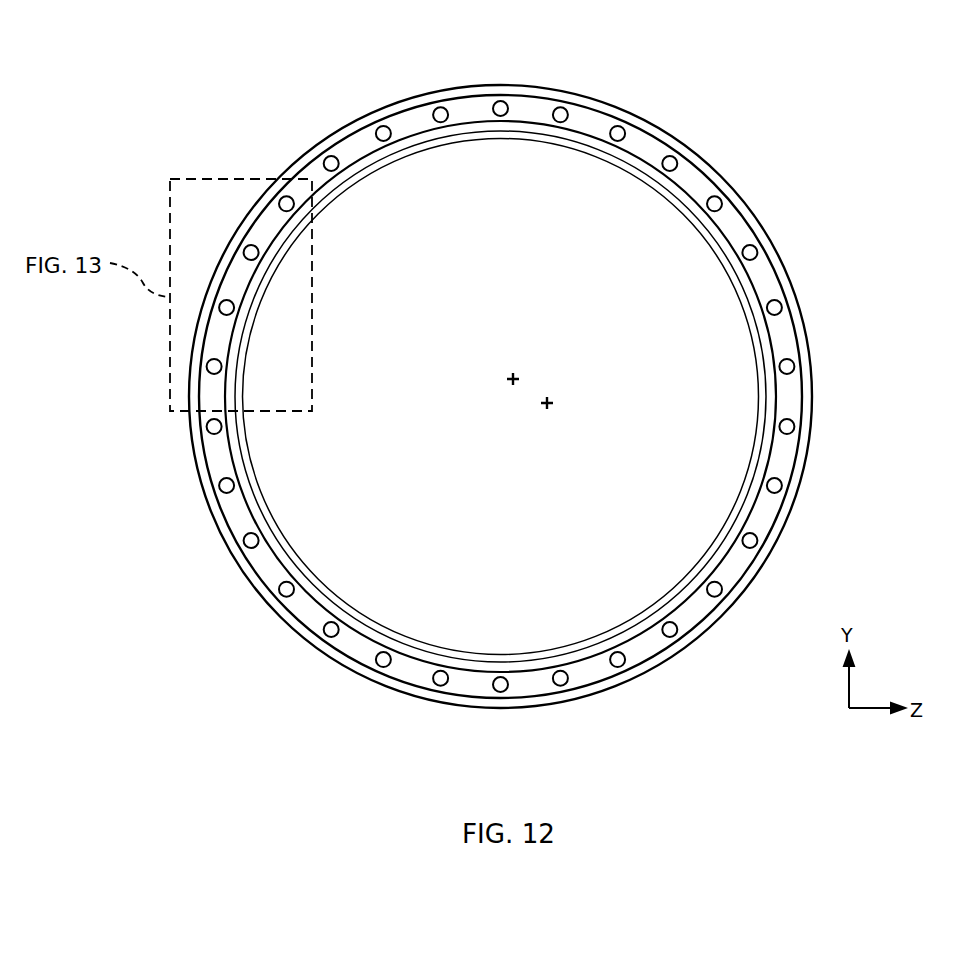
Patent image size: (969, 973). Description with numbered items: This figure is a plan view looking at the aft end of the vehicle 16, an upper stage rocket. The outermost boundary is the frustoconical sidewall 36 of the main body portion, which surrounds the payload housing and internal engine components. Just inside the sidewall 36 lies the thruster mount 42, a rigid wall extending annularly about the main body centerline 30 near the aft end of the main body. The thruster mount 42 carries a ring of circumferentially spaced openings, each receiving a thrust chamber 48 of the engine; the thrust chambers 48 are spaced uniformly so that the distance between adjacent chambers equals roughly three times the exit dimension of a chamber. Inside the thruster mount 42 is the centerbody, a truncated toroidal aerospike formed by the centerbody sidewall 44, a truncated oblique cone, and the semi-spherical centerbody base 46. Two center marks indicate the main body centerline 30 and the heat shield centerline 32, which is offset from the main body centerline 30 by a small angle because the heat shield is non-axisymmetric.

The vehicle 16 is at (307, 87).
The main body centerline 30 is at (517, 377).
The heat shield centerline 32 is at (552, 398).
The sidewall 36 is at (815, 383).
The thruster mount 42 is at (697, 180).
The centerbody sidewall 44 is at (743, 305).
The centerbody base 46 is at (730, 351).
The thrust chambers 48 is at (620, 133).